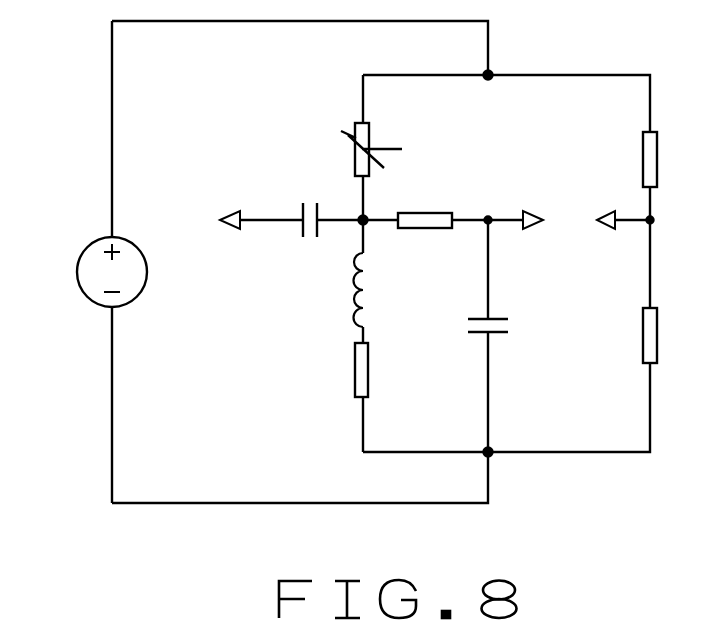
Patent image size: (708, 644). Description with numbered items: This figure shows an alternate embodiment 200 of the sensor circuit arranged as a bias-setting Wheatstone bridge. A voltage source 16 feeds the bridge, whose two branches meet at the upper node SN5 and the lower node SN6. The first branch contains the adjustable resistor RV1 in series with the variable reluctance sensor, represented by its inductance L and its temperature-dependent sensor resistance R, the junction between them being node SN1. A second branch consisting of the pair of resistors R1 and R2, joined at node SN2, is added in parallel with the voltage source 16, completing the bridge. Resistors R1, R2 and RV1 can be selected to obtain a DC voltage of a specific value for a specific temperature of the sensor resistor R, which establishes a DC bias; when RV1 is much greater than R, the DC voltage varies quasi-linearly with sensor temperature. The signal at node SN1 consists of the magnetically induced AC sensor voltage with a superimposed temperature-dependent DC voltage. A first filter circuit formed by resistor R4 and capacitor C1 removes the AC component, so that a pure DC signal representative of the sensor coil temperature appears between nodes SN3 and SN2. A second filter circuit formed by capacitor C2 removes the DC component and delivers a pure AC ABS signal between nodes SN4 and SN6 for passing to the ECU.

The voltage source 16 is at (66, 274).
The alternate embodiment 200 is at (403, 262).
The adjustable resistor RV1 is at (383, 137).
The inductance of variable reluctance sensor L is at (369, 290).
The sensor resistor R is at (375, 370).
The capacitor C2 is at (301, 205).
The resistor R4 is at (423, 206).
The capacitor C1 is at (507, 319).
The resistor R1 is at (666, 159).
The resistor R2 is at (669, 335).
The node SN1 is at (340, 204).
The node SN2 is at (623, 204).
The node SN3 is at (517, 204).
The node SN4 is at (235, 208).
The node SN5 is at (515, 61).
The node SN6 is at (518, 472).